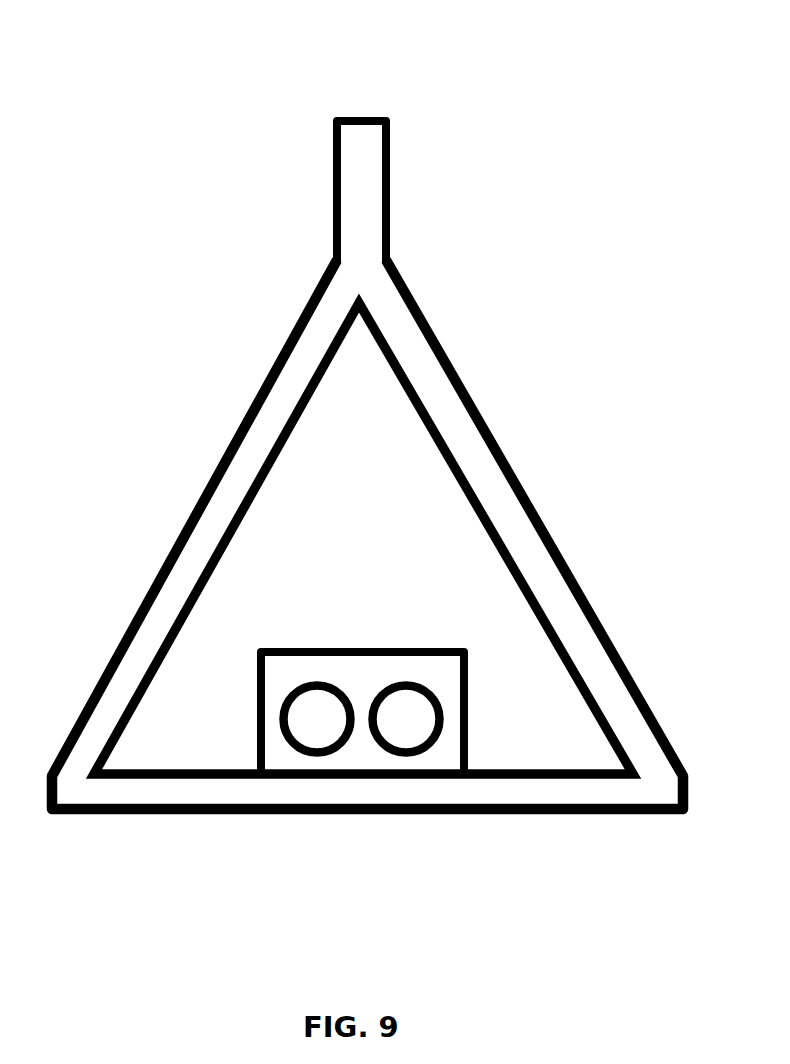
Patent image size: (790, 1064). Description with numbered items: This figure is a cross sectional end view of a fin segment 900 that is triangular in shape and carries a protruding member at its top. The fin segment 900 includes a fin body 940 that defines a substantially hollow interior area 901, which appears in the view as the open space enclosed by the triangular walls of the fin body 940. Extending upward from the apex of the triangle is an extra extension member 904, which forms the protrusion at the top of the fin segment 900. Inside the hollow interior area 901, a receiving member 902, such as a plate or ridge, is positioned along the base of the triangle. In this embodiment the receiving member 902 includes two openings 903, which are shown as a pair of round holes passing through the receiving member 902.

The fin segment 900 is at (617, 90).
The hollow interior area 901 is at (437, 507).
The receiving member 902 is at (442, 677).
The openings 903 is at (408, 738).
The extension member 904 is at (390, 195).
The fin body 940 is at (452, 358).